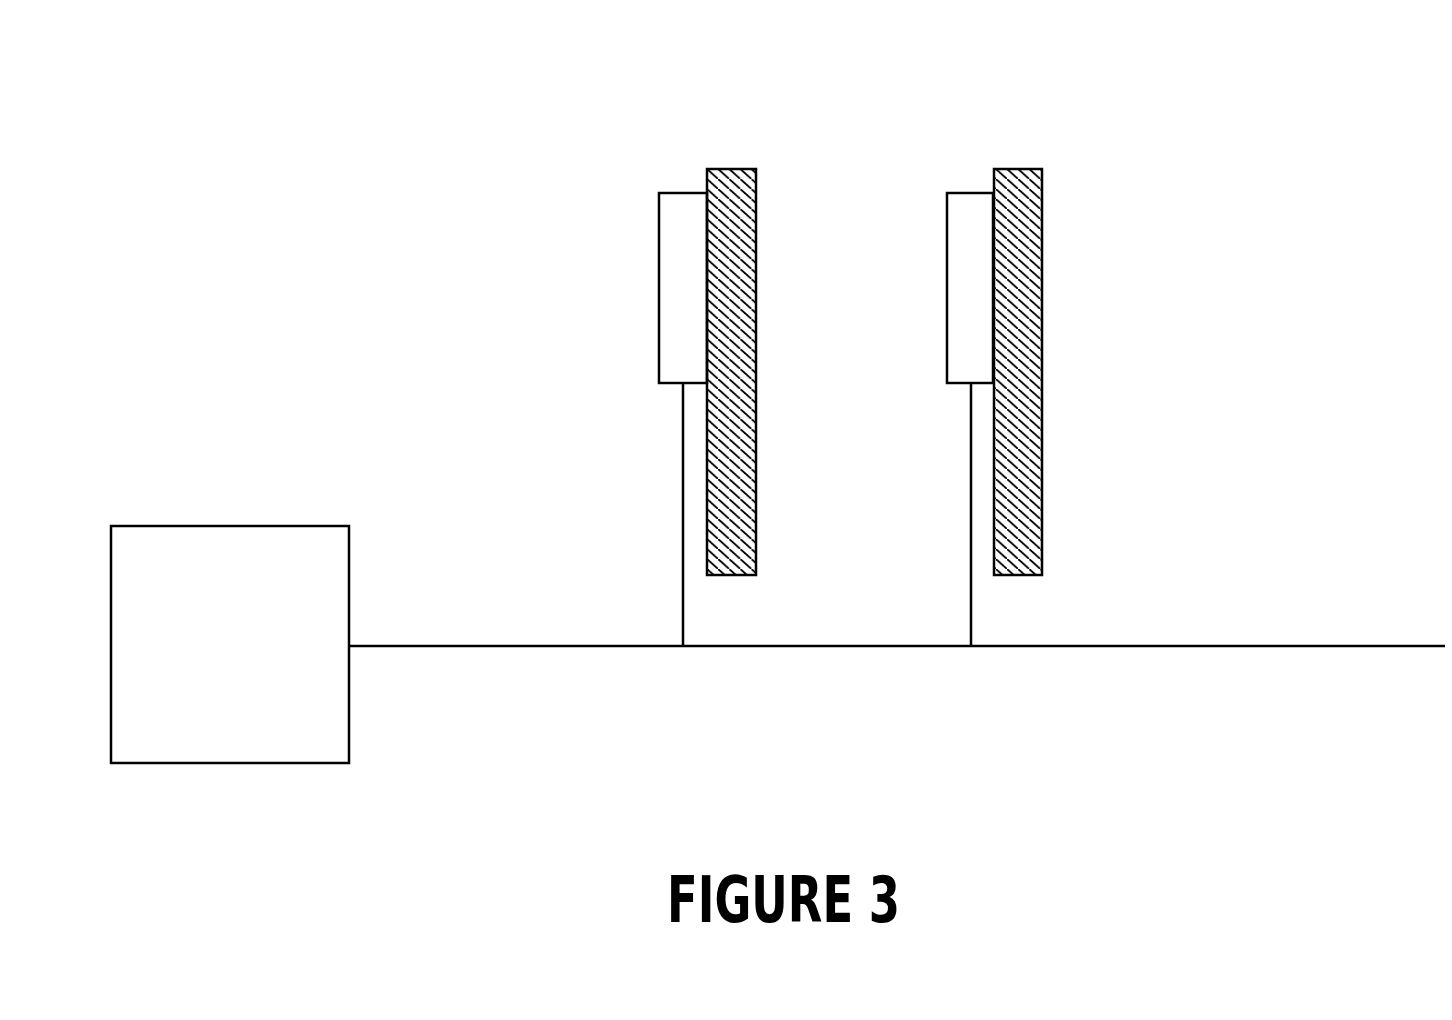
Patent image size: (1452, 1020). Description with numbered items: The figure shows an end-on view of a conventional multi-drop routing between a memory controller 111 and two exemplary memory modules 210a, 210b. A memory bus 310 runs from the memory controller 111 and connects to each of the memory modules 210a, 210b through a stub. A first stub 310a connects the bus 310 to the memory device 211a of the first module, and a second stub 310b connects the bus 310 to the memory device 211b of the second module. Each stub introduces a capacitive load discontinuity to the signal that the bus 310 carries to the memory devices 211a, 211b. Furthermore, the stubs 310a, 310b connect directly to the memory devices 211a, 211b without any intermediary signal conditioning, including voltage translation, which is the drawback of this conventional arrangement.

The memory controller 111 is at (158, 526).
The memory bus 310 is at (629, 660).
The stub 310a is at (683, 525).
The stub 310b is at (971, 623).
The memory module 210a is at (737, 137).
The memory module 210b is at (1032, 147).
The memory device 211a is at (659, 335).
The memory device 211b is at (947, 335).